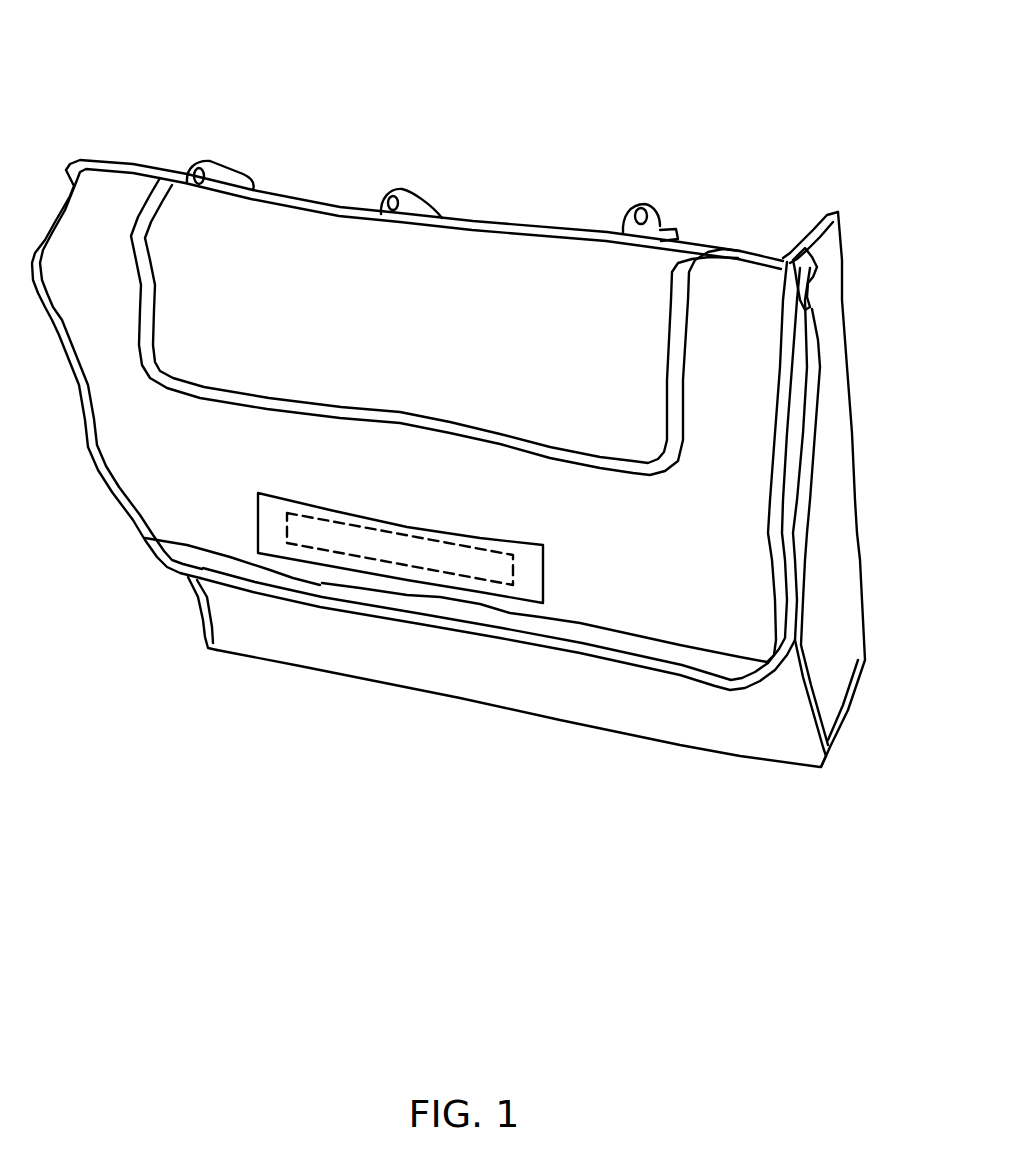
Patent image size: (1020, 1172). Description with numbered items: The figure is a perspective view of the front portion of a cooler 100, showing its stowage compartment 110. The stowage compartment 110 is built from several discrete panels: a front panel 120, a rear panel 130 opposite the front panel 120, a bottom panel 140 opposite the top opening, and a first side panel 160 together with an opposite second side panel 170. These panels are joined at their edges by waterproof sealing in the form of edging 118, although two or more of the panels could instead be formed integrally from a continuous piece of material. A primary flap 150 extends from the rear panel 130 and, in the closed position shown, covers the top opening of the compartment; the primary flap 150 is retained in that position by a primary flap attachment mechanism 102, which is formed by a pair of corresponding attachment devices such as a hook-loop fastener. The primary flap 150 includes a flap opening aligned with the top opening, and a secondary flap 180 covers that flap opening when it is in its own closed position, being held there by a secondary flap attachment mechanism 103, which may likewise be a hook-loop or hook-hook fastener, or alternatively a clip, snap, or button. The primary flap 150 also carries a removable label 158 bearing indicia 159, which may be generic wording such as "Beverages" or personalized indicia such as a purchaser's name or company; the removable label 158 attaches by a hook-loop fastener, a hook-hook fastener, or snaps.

The cooler 100 is at (120, 78).
The stowage compartment 110 is at (45, 430).
The primary flap 150 is at (143, 474).
The primary flap attachment mechanism 102 is at (645, 662).
The secondary flap 180 is at (482, 252).
The secondary flap attachment mechanism 103 is at (603, 472).
The removable label 158 is at (283, 497).
The indicia 159 is at (402, 528).
The first side panel 160 is at (171, 594).
The front panel 120 is at (433, 665).
The rear panel 130 is at (866, 385).
The second side panel 170 is at (830, 595).
The edging 118 is at (812, 710).
The bottom panel 140 is at (840, 750).